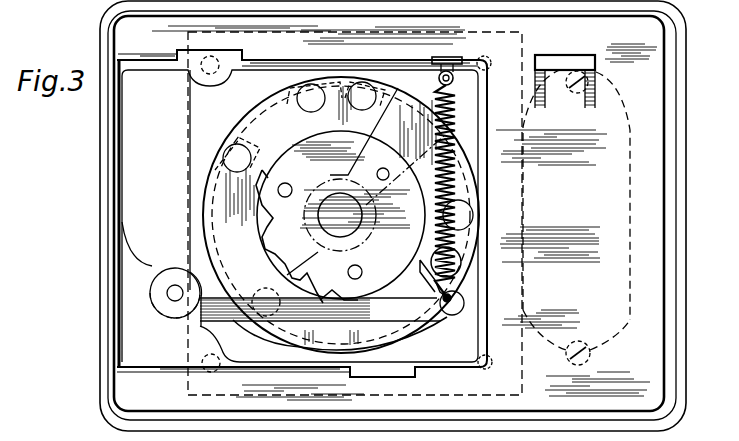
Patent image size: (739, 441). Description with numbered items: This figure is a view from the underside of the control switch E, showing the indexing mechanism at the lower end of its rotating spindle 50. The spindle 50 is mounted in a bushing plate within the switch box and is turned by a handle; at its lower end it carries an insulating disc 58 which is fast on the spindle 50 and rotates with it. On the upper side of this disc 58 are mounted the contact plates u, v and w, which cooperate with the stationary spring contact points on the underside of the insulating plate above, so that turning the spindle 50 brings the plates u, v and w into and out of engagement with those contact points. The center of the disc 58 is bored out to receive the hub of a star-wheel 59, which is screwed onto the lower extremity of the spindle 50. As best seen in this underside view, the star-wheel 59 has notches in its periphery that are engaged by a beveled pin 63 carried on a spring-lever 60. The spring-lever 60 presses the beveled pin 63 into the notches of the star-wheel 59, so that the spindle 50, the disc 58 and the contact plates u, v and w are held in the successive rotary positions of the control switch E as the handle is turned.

The control switch E is at (371, 216).
The rotating spindle 50 is at (361, 183).
The insulating disc 58 is at (341, 213).
The star-wheel 59 is at (341, 215).
The spring-lever 60 is at (410, 310).
The beveled pin 63 is at (323, 320).
The contact plate u is at (220, 211).
The contact plate v is at (430, 176).
The contact plate w is at (462, 250).